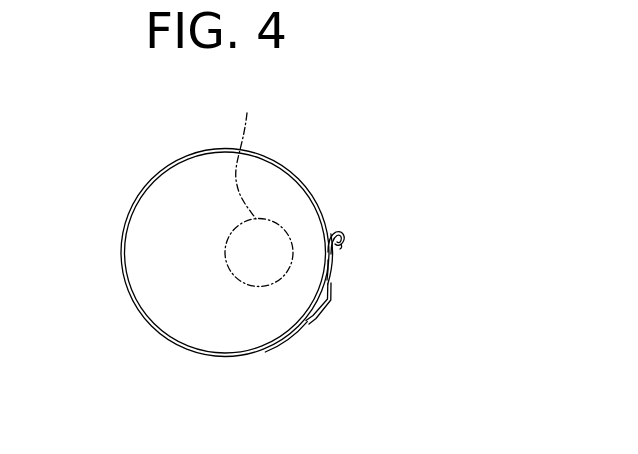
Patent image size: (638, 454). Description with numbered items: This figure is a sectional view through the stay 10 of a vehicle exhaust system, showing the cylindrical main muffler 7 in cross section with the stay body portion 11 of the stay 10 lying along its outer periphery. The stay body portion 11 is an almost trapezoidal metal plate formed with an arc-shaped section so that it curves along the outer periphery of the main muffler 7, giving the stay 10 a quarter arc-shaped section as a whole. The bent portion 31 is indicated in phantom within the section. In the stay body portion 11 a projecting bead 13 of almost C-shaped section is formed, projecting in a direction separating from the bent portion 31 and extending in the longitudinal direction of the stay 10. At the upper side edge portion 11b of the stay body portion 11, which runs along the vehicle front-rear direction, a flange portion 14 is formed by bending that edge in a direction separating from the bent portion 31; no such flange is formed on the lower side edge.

The main muffler 7 is at (132, 297).
The bent portion 31 is at (259, 183).
The stay 10 is at (331, 276).
The stay body portion 11 is at (284, 344).
The upper side edge portion 11b is at (343, 247).
The projecting bead 13 is at (312, 319).
The flange portion 14 is at (343, 233).